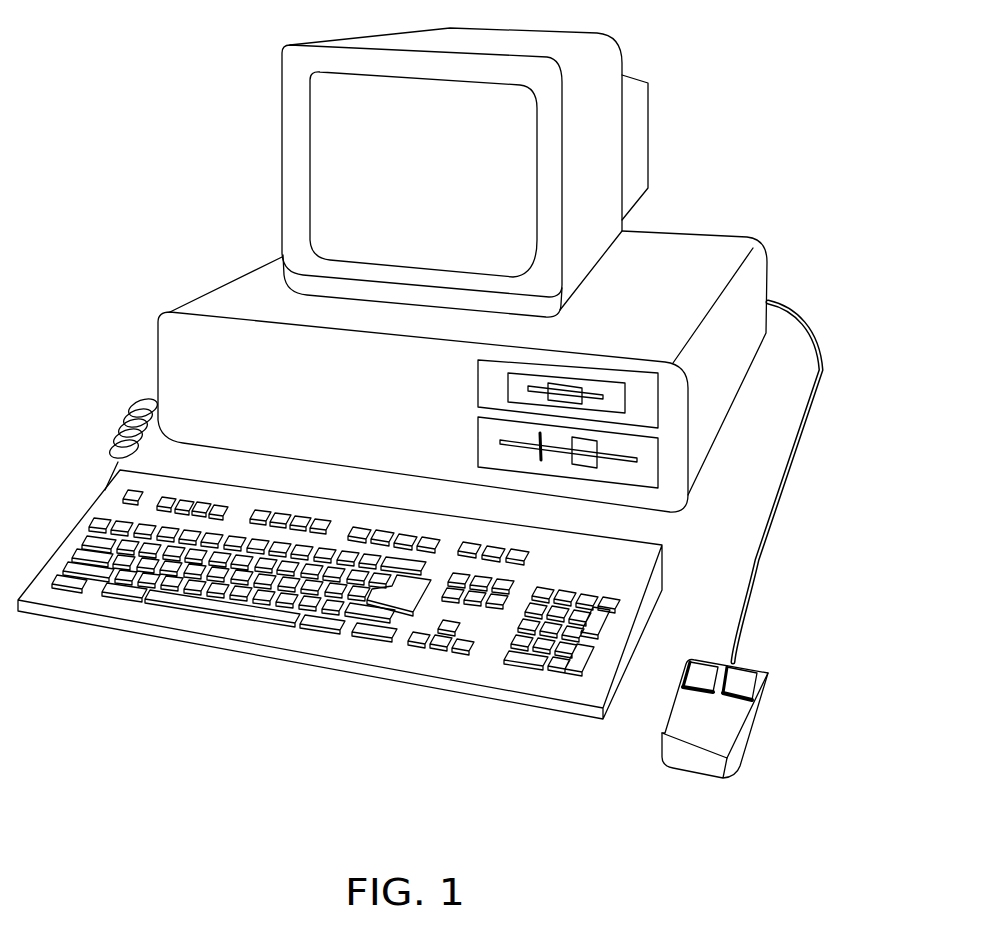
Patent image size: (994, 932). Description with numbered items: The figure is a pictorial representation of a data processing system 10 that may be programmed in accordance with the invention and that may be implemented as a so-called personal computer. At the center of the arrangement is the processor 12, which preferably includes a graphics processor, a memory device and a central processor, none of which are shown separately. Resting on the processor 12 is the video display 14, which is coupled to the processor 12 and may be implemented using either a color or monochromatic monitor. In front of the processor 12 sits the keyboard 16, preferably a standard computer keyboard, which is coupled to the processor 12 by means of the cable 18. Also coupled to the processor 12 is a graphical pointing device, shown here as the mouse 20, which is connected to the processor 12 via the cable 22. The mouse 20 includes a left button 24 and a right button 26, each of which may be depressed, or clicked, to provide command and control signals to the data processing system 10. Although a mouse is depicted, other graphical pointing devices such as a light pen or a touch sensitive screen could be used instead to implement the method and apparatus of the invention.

The data processing system 10 is at (202, 108).
The processor 12 is at (703, 478).
The video display 14 is at (637, 108).
The keyboard 16 is at (188, 622).
The cable 18 is at (118, 420).
The mouse 20 is at (711, 733).
The cable 22 is at (737, 604).
The left button 24 is at (695, 668).
The right button 26 is at (743, 676).